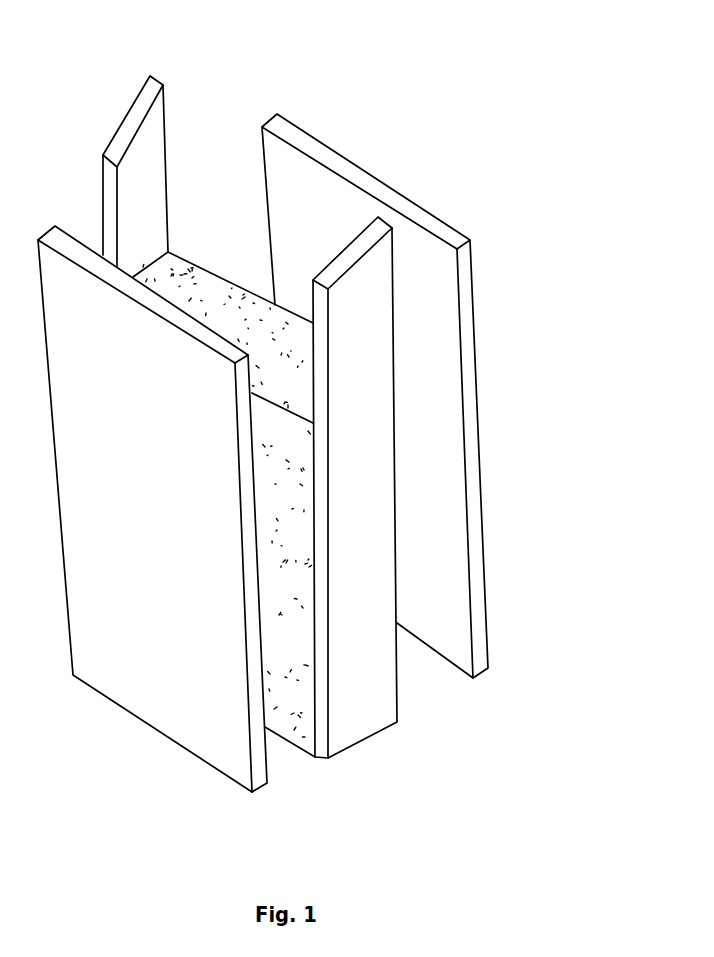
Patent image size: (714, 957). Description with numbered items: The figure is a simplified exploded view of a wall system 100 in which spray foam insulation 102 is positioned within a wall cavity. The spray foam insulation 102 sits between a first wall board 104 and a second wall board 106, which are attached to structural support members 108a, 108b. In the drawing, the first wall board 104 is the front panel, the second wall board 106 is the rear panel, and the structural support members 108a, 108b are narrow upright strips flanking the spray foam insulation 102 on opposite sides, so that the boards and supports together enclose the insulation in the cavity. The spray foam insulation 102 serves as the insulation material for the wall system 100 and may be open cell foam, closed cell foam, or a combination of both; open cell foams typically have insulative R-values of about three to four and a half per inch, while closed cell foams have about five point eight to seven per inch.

The sandwich panel assembly 100 is at (488, 127).
The spray foam insulation 102 is at (245, 323).
The first wall board 104 is at (132, 678).
The second wall board 106 is at (440, 378).
The structural support member 108a is at (375, 275).
The structural support member 108b is at (148, 122).